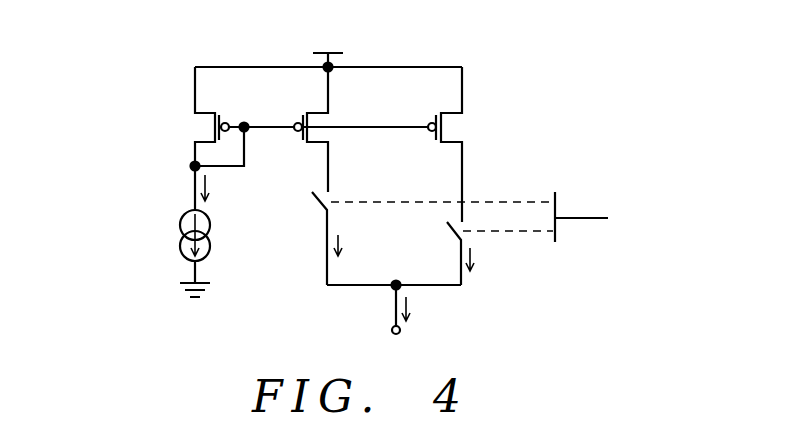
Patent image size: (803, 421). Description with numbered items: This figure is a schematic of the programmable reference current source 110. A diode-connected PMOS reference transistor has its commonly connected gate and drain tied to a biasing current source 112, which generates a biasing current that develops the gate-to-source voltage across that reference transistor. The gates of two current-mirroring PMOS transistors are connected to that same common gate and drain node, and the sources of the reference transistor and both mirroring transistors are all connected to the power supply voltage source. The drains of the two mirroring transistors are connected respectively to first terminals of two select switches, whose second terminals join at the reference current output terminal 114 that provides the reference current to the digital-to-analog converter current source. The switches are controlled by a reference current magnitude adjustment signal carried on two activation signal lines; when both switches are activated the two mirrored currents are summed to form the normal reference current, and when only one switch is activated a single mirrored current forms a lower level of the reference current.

The programmable reference current source 110 is at (146, 28).
The biasing current source 112 is at (180, 225).
The reference current output terminal 114 is at (392, 330).